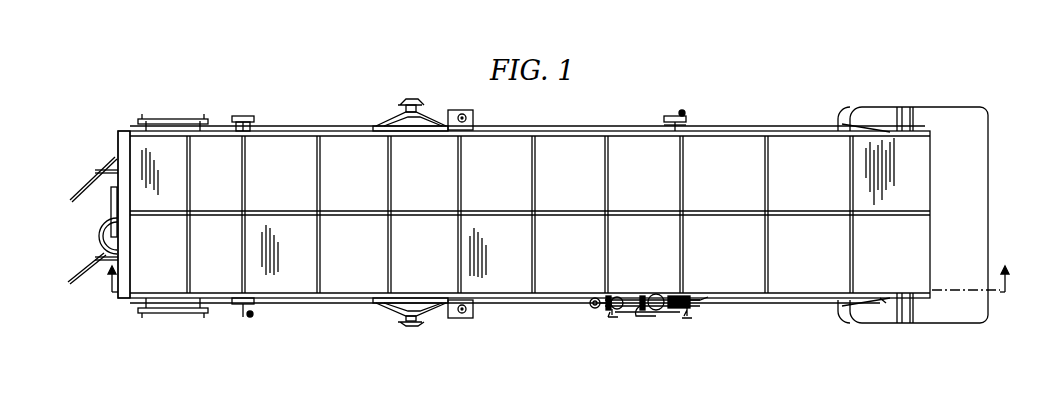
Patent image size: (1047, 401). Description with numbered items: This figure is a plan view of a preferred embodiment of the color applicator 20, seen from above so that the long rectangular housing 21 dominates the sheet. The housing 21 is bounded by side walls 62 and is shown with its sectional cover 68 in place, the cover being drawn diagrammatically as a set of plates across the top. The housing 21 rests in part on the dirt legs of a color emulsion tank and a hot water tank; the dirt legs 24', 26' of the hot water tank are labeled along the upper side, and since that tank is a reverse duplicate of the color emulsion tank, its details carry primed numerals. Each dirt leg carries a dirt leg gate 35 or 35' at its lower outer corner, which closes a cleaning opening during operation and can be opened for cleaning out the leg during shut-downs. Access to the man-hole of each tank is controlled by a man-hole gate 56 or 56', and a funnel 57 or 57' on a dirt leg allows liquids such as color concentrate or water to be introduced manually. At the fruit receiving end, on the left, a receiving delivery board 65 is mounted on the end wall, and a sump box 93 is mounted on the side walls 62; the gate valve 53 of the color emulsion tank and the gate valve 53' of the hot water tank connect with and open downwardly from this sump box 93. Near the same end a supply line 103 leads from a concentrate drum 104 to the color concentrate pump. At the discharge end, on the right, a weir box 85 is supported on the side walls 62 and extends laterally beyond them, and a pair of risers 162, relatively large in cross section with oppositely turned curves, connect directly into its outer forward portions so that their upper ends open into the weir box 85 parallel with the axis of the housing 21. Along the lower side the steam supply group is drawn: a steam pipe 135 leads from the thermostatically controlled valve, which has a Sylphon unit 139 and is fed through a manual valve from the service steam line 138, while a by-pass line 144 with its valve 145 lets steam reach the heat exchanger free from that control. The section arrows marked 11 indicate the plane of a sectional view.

The color applicator 20 is at (710, 62).
The housing 21 is at (728, 150).
The dirt leg 24' is at (273, 120).
The dirt leg 26' is at (651, 118).
The dirt leg gate 35 is at (243, 318).
The dirt leg gate 35' is at (459, 108).
The gate valve 53 is at (76, 266).
The gate valve 53' is at (91, 171).
The man-hole gate 56 is at (406, 322).
The man-hole gate 56' is at (410, 108).
The funnel 57 is at (474, 318).
The funnel 57' is at (475, 108).
The side walls 62 is at (306, 130).
The receiving delivery board 65 is at (123, 138).
The sectional cover 68 is at (576, 197).
The weir box 85 is at (982, 196).
The sump box 93 is at (168, 310).
The supply line 103 is at (101, 234).
The concentrate drum 104 is at (111, 208).
The section line 11 is at (561, 283).
The steam pipe 135 is at (697, 298).
The service steam line 138 is at (592, 307).
The Sylphon unit 139 is at (652, 310).
The by-pass line 144 is at (667, 316).
The valve 145 is at (694, 319).
The risers 162 is at (912, 116).